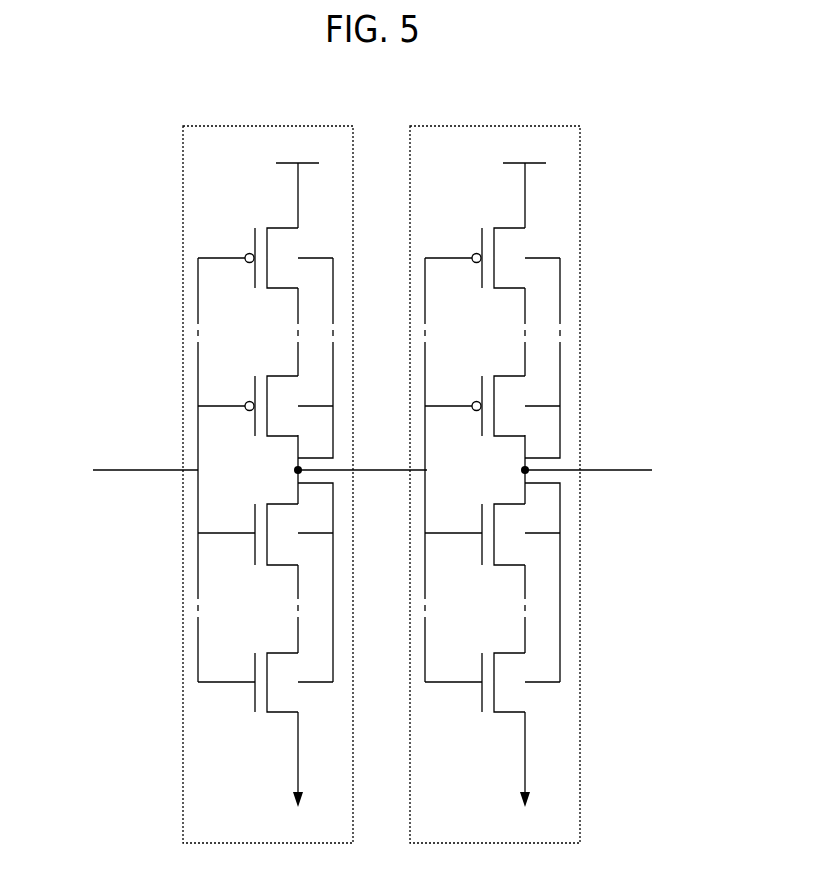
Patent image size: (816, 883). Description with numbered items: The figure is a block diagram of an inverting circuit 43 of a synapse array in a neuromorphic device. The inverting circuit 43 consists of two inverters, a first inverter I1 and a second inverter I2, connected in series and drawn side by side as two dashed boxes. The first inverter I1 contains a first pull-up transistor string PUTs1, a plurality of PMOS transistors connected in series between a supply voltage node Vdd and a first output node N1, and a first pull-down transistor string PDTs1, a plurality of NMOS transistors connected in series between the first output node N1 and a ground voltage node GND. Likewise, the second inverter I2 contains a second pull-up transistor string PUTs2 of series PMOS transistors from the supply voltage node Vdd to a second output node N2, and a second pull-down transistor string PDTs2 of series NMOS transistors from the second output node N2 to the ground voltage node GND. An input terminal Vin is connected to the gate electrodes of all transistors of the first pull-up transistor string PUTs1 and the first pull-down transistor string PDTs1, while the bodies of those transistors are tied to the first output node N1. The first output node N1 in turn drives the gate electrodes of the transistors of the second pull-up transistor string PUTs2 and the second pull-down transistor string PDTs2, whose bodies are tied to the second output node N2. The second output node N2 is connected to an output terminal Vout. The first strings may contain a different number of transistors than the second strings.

The inverting circuit 43 is at (384, 97).
The first inverter I1 is at (353, 165).
The second inverter I2 is at (580, 165).
The first pull-up transistor string PUTs1 is at (256, 198).
The first pull-down transistor string PDTs1 is at (256, 741).
The second pull-up transistor string PUTs2 is at (483, 198).
The second pull-down transistor string PDTs2 is at (483, 741).
The first output node N1 is at (349, 471).
The second output node N2 is at (514, 471).
The input terminal Vin is at (130, 470).
The output terminal Vout is at (610, 470).
The supply voltage node Vdd is at (297, 182).
The ground voltage node GND is at (297, 774).